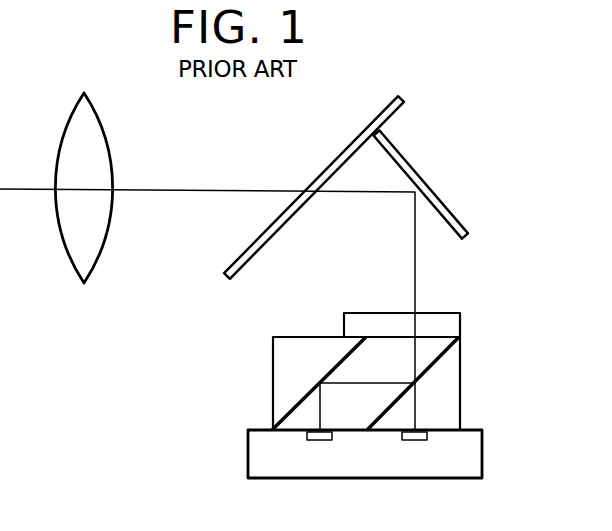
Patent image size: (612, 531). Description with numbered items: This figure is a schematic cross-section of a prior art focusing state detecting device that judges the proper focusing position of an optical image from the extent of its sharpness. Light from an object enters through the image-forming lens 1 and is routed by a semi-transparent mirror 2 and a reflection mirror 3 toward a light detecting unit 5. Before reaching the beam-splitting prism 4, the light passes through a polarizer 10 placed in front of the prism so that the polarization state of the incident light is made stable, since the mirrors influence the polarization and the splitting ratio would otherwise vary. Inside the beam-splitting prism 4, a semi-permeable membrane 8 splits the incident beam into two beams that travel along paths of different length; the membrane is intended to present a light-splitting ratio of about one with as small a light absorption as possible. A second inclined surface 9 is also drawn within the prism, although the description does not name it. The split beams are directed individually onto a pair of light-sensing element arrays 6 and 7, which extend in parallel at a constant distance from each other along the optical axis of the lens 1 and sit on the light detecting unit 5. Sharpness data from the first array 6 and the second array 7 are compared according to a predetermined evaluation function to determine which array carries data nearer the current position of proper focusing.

The image-forming lens 1 is at (108, 140).
The semi-transparent mirror 2 is at (345, 148).
The reflection mirror 3 is at (420, 172).
The beam-splitting prism 4 is at (460, 405).
The light detecting unit 5 is at (482, 448).
The first light-sensing element array 6 is at (318, 440).
The second light-sensing element array 7 is at (413, 440).
The semi-permeable membrane 8 is at (430, 365).
The reflecting surface 9 is at (303, 397).
The polarizer 10 is at (390, 312).